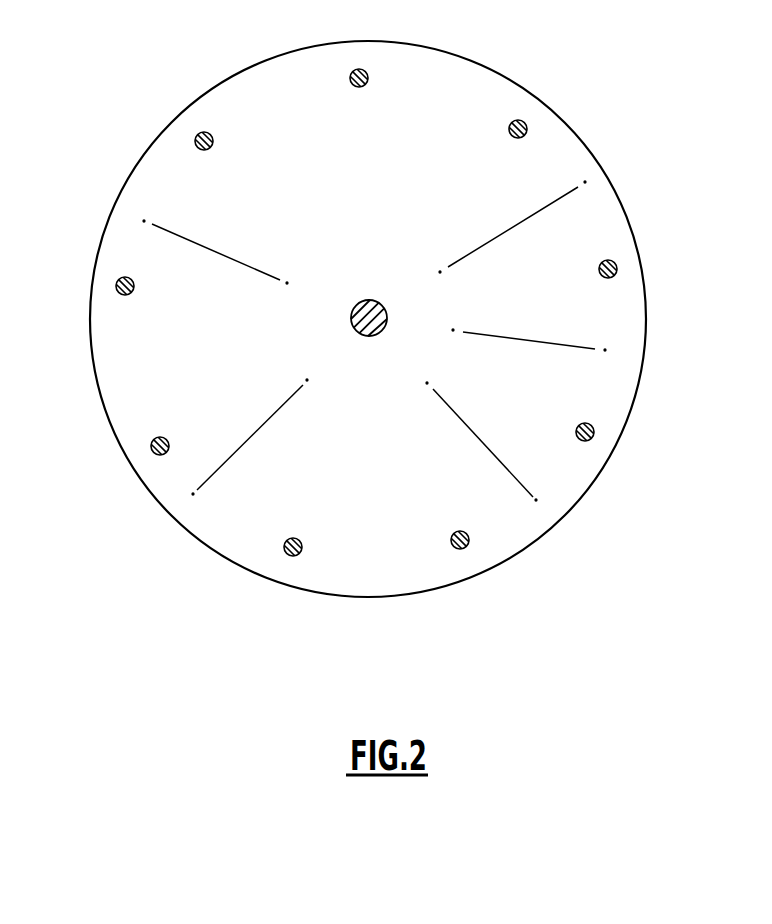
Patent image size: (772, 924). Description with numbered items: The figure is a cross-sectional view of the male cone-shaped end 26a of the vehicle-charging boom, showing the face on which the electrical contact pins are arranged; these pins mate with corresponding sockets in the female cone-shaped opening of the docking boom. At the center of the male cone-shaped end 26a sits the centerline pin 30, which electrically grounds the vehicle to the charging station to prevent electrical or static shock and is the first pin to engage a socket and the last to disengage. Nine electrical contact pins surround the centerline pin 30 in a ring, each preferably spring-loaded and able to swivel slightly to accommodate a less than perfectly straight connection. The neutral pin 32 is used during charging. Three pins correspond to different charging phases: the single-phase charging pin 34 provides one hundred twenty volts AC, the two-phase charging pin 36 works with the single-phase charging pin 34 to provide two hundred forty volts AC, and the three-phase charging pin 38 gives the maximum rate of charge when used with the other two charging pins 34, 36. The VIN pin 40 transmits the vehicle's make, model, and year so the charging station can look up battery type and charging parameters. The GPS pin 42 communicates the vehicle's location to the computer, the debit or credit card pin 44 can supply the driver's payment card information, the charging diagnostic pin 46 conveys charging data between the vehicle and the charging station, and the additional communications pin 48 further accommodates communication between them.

The male cone-shaped end 26a is at (369, 460).
The centerline pin 30 is at (370, 300).
The neutral pin 32 is at (358, 68).
The single-phase charging pin 34 is at (526, 122).
The two-phase charging pin 36 is at (618, 266).
The three-phase charging pin 38 is at (592, 439).
The VIN pin 40 is at (465, 548).
The GPS pin 42 is at (292, 557).
The debit or credit card pin 44 is at (152, 452).
The charging diagnostic pin 46 is at (116, 289).
The communications pin 48 is at (197, 134).